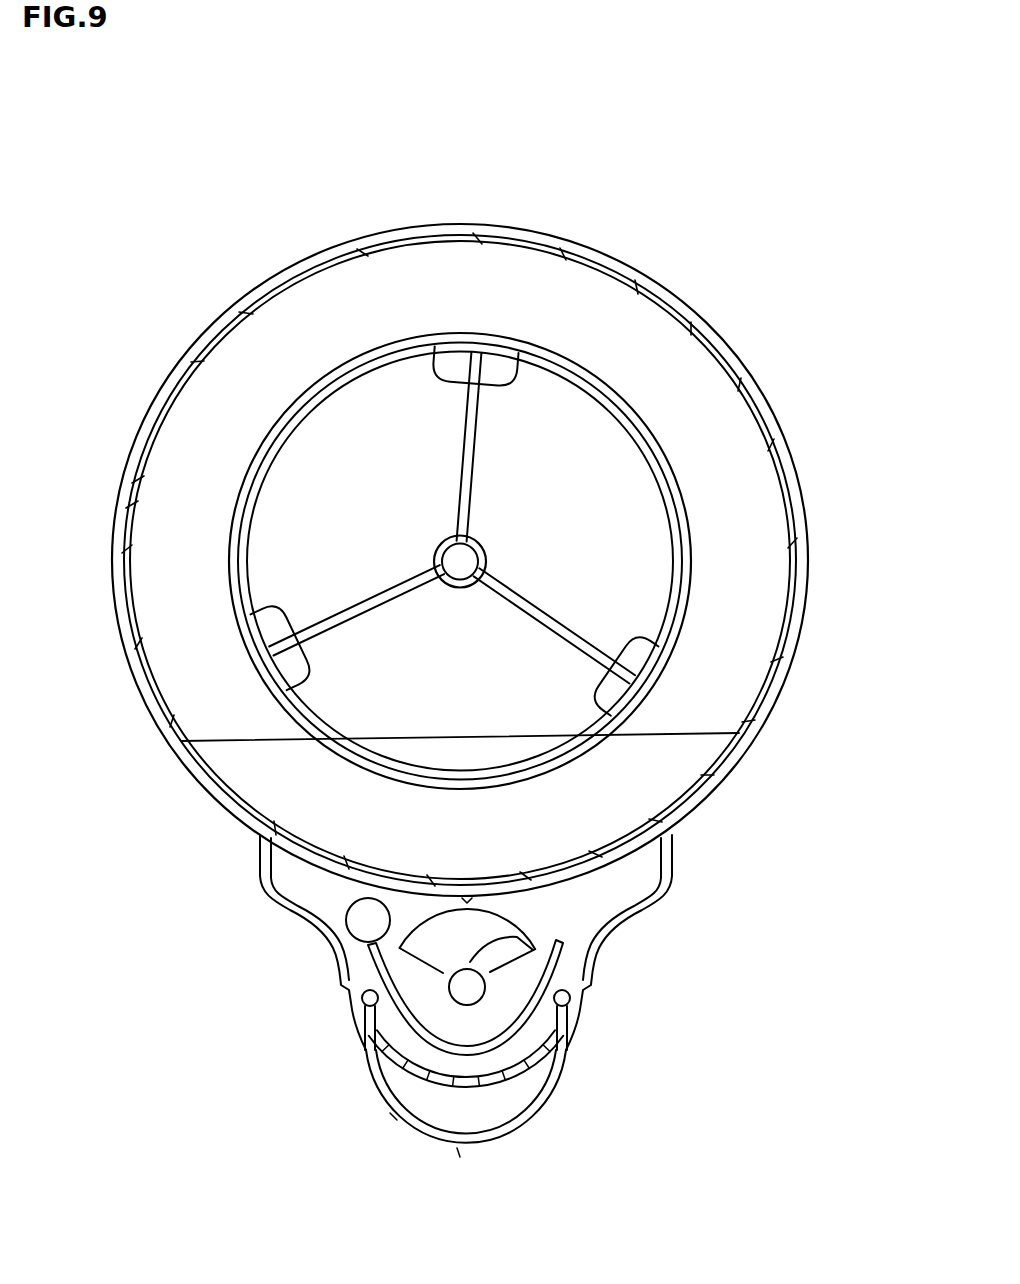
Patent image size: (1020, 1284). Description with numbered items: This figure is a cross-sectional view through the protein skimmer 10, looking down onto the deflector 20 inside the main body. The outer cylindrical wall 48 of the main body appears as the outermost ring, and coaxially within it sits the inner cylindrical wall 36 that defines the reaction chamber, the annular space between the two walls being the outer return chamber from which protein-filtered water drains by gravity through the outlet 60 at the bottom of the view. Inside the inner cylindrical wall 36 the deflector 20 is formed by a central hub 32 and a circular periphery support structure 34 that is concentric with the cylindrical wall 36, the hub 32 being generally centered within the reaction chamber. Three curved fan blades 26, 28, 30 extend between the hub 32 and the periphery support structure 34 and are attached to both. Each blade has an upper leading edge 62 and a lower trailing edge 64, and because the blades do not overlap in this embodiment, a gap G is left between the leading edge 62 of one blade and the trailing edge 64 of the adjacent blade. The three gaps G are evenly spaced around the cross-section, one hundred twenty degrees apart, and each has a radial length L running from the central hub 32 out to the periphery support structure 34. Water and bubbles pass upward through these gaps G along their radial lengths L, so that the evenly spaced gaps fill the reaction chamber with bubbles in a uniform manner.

The protein skimmer 10 is at (813, 422).
The deflector 20 is at (627, 397).
The fan blade 26 is at (573, 501).
The fan blade 28 is at (411, 707).
The fan blade 30 is at (386, 501).
The central hub 32 is at (467, 570).
The periphery support structure 34 is at (313, 393).
The inner cylindrical wall 36 is at (663, 448).
The outer cylindrical wall 48 is at (765, 715).
The outlet 60 is at (523, 1077).
The upper leading edge 62 is at (523, 357).
The lower trailing edge 64 is at (435, 350).
The gap G is at (457, 423).
The radial length L is at (422, 552).